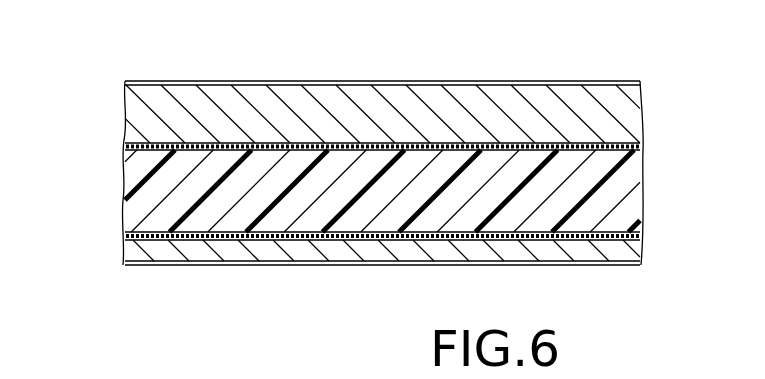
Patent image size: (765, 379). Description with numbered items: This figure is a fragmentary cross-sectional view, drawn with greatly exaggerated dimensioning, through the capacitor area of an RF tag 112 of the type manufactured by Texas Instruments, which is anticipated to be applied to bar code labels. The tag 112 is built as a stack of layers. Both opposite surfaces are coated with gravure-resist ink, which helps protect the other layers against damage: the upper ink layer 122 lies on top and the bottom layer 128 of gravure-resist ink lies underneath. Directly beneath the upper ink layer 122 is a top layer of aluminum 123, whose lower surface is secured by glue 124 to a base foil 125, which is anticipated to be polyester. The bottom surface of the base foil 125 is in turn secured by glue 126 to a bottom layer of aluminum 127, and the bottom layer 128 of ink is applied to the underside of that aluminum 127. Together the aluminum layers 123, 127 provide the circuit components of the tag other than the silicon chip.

The RF tag 112 is at (98, 141).
The upper ink layer 122 is at (558, 81).
The top layer of aluminum 123 is at (632, 112).
The glue 124 is at (641, 147).
The base foil 125 is at (623, 185).
The glue 126 is at (642, 236).
The bottom layer of aluminum 127 is at (643, 250).
The bottom layer of gravure-resist ink 128 is at (310, 265).